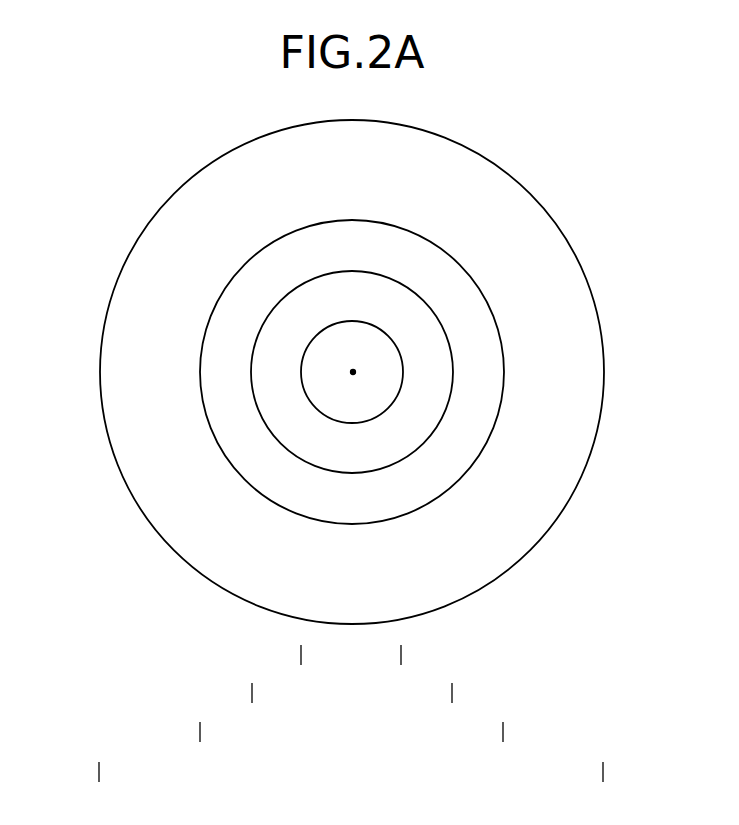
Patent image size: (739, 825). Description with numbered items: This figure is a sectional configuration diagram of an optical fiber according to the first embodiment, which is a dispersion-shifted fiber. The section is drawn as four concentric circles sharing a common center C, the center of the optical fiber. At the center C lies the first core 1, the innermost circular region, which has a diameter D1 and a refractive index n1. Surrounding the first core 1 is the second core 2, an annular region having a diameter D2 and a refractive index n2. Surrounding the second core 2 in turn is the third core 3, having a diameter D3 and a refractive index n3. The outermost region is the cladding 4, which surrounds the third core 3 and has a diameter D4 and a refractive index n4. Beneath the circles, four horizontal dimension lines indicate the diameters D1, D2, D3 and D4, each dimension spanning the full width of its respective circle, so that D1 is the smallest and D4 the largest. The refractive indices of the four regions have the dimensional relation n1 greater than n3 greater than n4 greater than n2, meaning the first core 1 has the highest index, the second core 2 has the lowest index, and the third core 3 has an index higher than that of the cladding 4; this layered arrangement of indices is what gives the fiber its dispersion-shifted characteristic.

The first core 1 is at (383, 357).
The second core 2 is at (432, 358).
The third core 3 is at (488, 362).
The cladding 4 is at (588, 400).
The center of the optical fiber C is at (353, 372).
The diameter of the first core D1 is at (301, 655).
The diameter of the second core D2 is at (252, 693).
The diameter of the third core D3 is at (200, 732).
The diameter of the cladding D4 is at (99, 772).